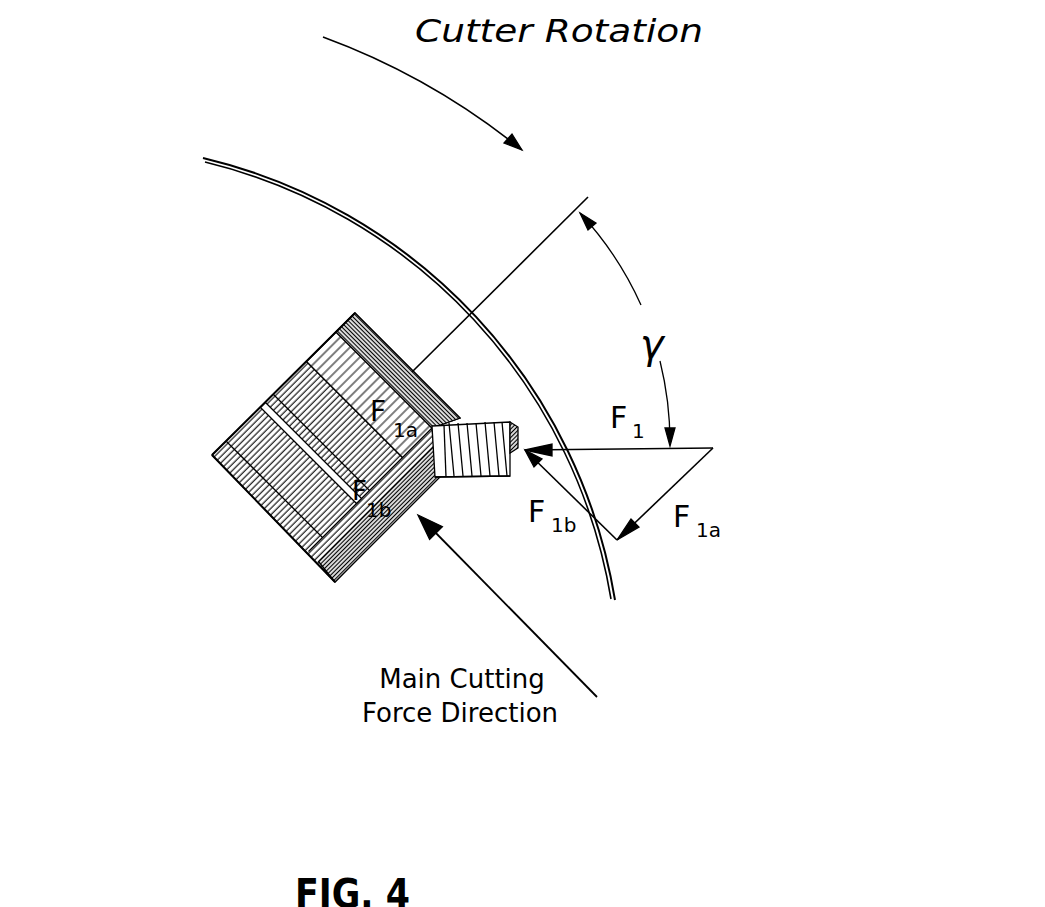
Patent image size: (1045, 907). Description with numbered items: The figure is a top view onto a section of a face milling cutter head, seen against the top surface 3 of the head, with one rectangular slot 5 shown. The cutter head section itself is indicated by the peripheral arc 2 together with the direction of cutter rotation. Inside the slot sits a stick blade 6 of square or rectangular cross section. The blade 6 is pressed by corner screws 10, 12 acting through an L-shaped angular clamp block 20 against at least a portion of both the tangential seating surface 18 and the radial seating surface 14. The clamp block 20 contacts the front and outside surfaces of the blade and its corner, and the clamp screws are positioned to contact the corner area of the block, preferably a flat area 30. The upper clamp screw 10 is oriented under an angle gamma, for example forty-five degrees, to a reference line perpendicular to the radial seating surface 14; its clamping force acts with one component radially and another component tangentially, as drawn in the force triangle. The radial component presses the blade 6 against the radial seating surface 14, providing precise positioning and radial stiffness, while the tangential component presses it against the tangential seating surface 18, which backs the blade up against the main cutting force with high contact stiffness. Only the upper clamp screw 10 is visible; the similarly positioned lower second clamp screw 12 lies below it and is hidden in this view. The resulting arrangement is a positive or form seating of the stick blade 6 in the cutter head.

The cutter body 2 is at (310, 193).
The top surface 3 is at (267, 222).
The rectangular slot 5 is at (352, 380).
The angular clamp block 20 is at (382, 338).
The second clamp screw 12 is at (484, 423).
The clamp screw 10 is at (473, 478).
The tangential seating surface 18 is at (288, 372).
The stick blade 6 is at (250, 440).
The radial seating surface 14 is at (250, 503).
The flat area 30 is at (410, 510).